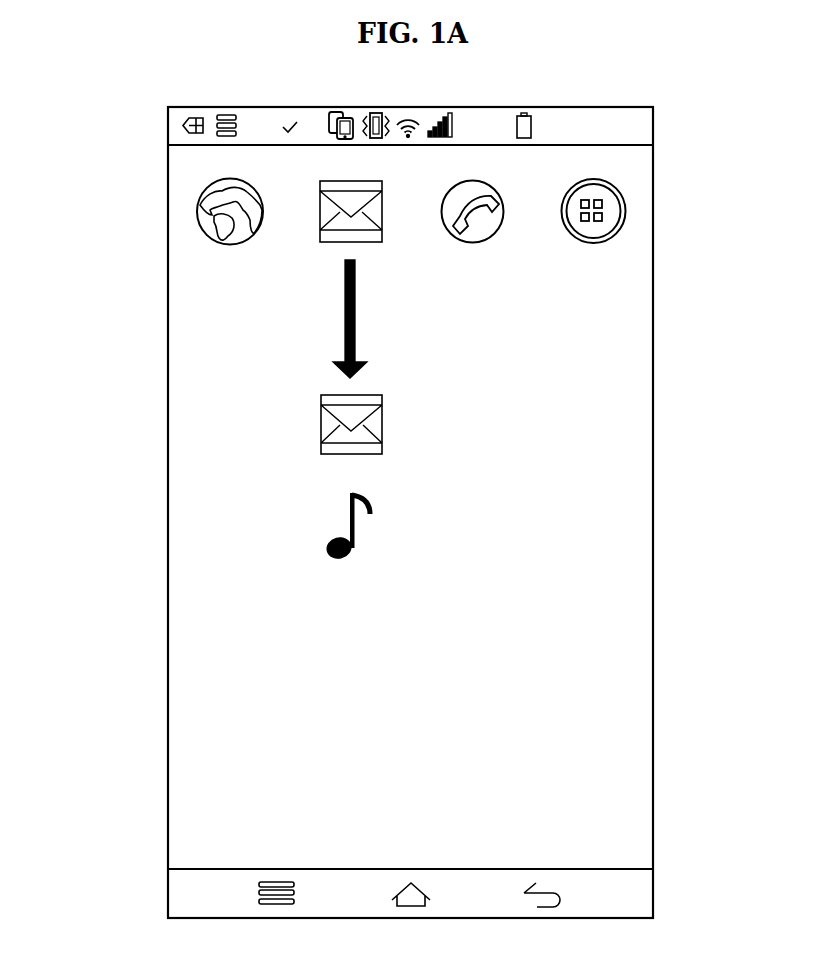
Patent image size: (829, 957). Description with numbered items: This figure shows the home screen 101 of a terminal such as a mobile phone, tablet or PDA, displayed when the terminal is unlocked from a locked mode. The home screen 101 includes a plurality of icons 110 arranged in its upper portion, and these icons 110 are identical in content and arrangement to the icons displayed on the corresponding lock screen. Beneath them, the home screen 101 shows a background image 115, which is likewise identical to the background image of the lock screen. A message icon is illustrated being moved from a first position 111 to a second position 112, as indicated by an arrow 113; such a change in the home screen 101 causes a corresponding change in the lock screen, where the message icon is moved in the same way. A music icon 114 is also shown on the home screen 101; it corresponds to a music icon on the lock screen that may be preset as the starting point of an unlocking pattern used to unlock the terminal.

The home screen 101 is at (660, 228).
The plurality of icons 110 is at (160, 173).
The first position 111 is at (383, 233).
The second position 112 is at (383, 420).
The arrow 113 is at (355, 316).
The music icon 114 is at (372, 508).
The background image 115 is at (224, 697).